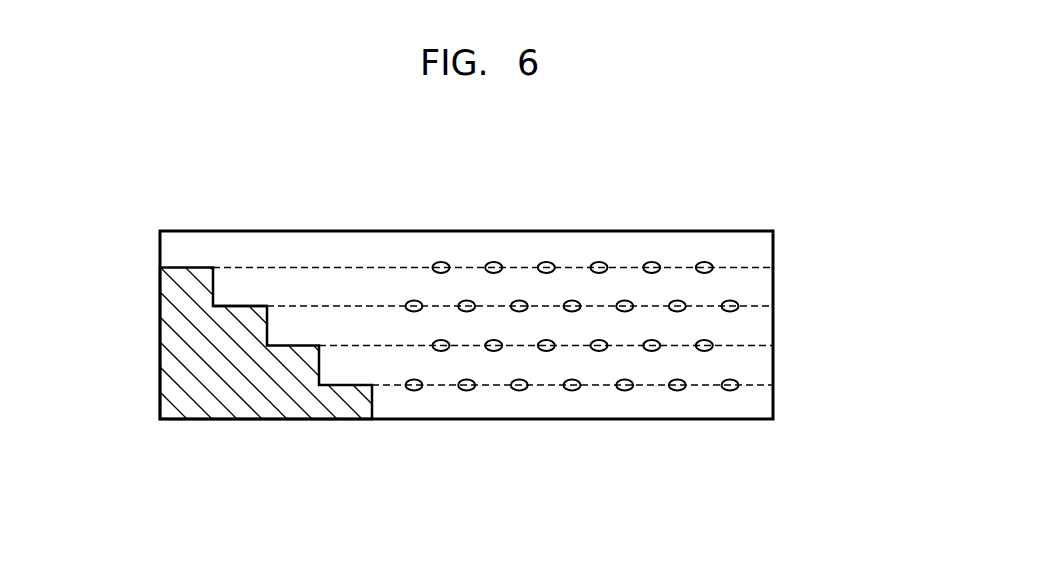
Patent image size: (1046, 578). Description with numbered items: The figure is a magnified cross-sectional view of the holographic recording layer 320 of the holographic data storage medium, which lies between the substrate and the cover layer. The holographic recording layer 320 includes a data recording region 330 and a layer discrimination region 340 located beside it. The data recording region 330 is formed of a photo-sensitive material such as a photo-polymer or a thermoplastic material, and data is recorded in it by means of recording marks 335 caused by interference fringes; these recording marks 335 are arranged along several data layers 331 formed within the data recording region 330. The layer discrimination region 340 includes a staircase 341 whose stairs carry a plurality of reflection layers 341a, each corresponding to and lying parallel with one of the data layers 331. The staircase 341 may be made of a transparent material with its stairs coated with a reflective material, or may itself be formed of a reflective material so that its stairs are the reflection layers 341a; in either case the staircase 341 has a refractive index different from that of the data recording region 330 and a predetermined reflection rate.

The holographic recording layer 320 is at (764, 222).
The data recording region 330 is at (493, 343).
The data layers 331 is at (397, 265).
The recording mark 335 is at (441, 262).
The layer discrimination region 340 is at (228, 343).
The staircase 341 is at (172, 355).
The reflection layers 341a is at (239, 303).